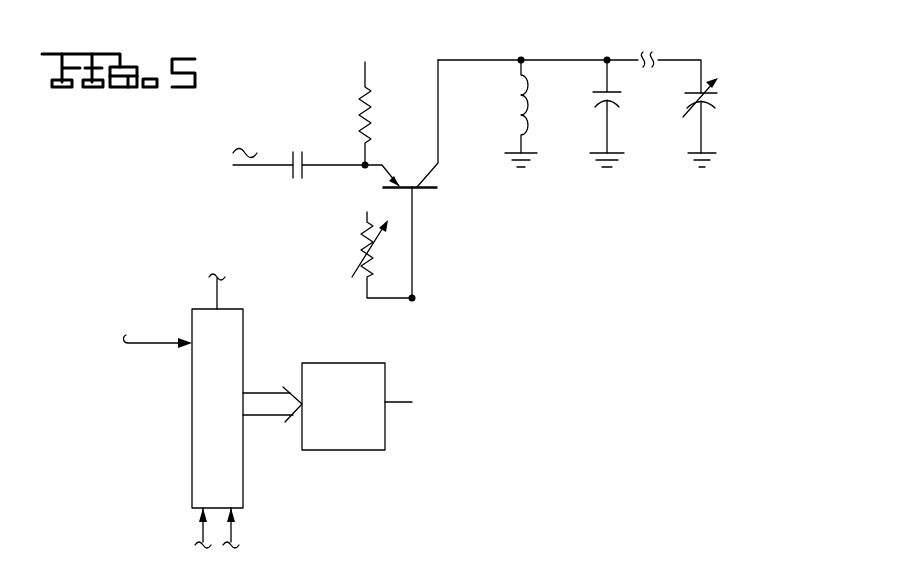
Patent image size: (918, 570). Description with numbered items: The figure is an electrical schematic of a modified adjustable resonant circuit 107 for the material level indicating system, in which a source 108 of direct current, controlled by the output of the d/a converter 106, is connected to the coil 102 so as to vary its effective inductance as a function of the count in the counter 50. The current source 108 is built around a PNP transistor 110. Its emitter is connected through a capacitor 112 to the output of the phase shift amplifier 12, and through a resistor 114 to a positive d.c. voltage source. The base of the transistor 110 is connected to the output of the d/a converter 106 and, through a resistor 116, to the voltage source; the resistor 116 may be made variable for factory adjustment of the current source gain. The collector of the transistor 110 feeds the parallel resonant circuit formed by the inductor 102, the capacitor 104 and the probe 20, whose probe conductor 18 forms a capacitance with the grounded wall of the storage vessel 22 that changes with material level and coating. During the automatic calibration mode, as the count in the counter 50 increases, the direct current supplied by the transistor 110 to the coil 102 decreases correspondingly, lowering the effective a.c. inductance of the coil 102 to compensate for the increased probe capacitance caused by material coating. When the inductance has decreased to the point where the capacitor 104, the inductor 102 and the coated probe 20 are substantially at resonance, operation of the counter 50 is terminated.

The phase shift amplifier 12 is at (220, 175).
The probe conductor 18 is at (703, 67).
The probe assembly 20 is at (712, 100).
The storage vessel 22 is at (702, 132).
The counter 50 is at (245, 348).
The coil 102 is at (511, 100).
The capacitor 104 is at (621, 97).
The d/a converter 106 is at (358, 352).
The adjustable resonant circuit 107 is at (566, 222).
The current source 108 is at (338, 195).
The PNP transistor 110 is at (410, 172).
The capacitor 112 is at (302, 147).
The resistor 114 is at (367, 123).
The resistor 116 is at (360, 245).